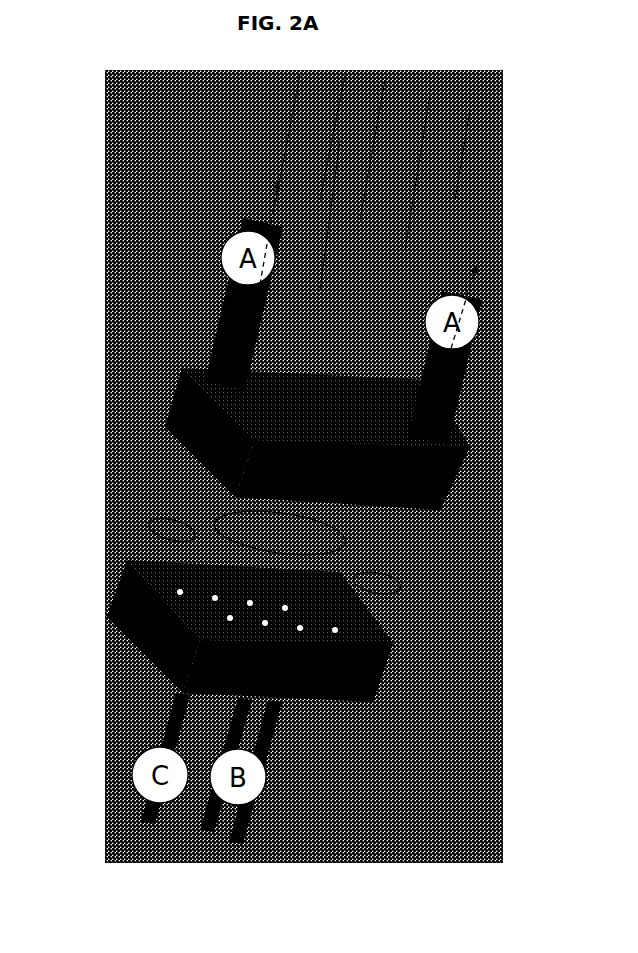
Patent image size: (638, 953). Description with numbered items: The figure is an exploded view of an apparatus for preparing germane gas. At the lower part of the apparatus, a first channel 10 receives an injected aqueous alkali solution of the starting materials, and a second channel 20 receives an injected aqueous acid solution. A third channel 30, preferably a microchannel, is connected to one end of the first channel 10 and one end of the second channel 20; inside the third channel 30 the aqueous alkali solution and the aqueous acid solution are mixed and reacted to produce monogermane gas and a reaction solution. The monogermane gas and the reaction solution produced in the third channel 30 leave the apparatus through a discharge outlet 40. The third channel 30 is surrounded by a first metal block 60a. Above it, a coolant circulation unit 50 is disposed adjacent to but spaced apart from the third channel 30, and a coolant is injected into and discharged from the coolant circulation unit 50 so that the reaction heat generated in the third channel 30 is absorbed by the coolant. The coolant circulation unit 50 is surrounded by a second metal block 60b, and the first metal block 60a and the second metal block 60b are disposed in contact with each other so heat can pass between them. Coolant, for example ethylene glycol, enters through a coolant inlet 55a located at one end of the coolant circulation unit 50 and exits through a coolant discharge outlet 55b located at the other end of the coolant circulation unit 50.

The first channel 10 is at (233, 840).
The second channel 20 is at (203, 825).
The third channel 30 is at (322, 588).
The discharge outlet 40 is at (143, 822).
The coolant circulation unit 50 is at (334, 384).
The coolant inlet 55a is at (458, 373).
The coolant discharge outlet 55b is at (222, 303).
The first metal block 60a is at (385, 667).
The second metal block 60b is at (440, 482).